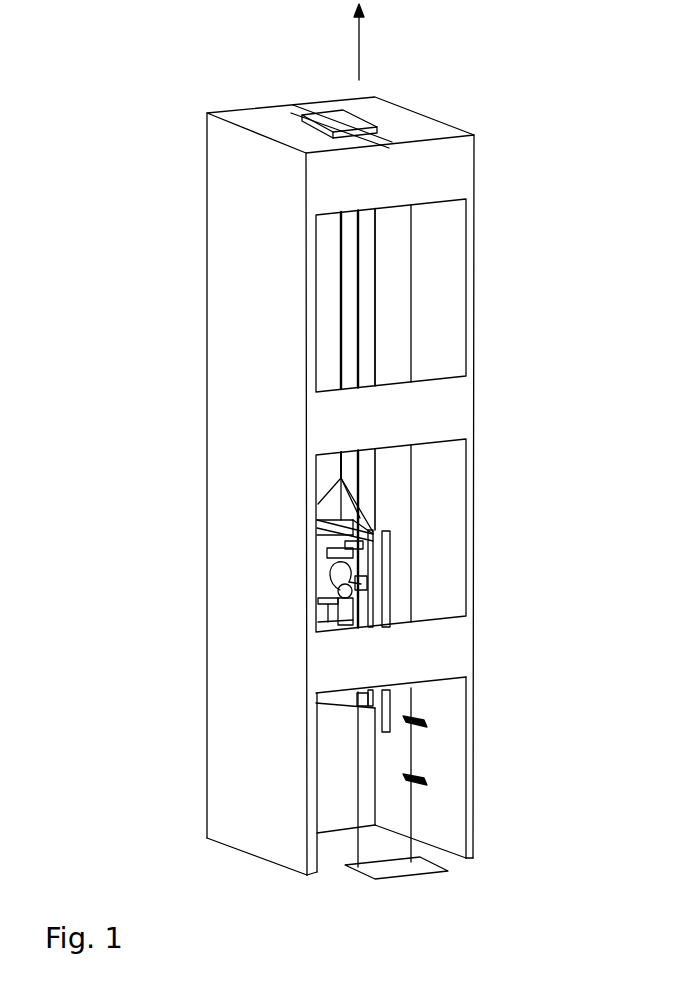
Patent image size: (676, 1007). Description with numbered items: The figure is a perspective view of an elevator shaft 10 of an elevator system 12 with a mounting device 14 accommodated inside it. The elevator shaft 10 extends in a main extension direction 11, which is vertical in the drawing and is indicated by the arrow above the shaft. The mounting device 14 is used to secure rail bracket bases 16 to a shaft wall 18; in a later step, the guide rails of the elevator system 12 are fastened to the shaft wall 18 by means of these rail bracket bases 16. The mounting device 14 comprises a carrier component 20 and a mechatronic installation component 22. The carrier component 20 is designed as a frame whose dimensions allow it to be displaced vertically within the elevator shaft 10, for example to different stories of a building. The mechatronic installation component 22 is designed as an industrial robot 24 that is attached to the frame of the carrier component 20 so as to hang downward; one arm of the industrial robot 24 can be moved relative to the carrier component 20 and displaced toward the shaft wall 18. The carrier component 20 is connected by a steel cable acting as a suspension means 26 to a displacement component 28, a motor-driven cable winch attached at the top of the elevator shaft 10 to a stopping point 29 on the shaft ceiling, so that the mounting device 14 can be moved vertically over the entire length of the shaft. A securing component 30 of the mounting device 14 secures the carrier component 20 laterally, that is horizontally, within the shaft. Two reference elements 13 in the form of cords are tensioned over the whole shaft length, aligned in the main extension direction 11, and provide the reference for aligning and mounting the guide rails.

The elevator shaft 10 is at (445, 499).
The main extension direction 11 is at (362, 27).
The elevator system 12 is at (500, 268).
The reference elements 13 is at (357, 842).
The mounting device 14 is at (412, 576).
The rail bracket bases 16 is at (427, 725).
The shaft wall 18 is at (447, 325).
The carrier component 20 is at (320, 547).
The mechatronic installation component 22 is at (326, 583).
The industrial robot 24 is at (333, 617).
The suspension means 26 is at (338, 328).
The displacement component 28 is at (333, 117).
The stopping point 29 is at (398, 123).
The securing component 30 is at (392, 712).